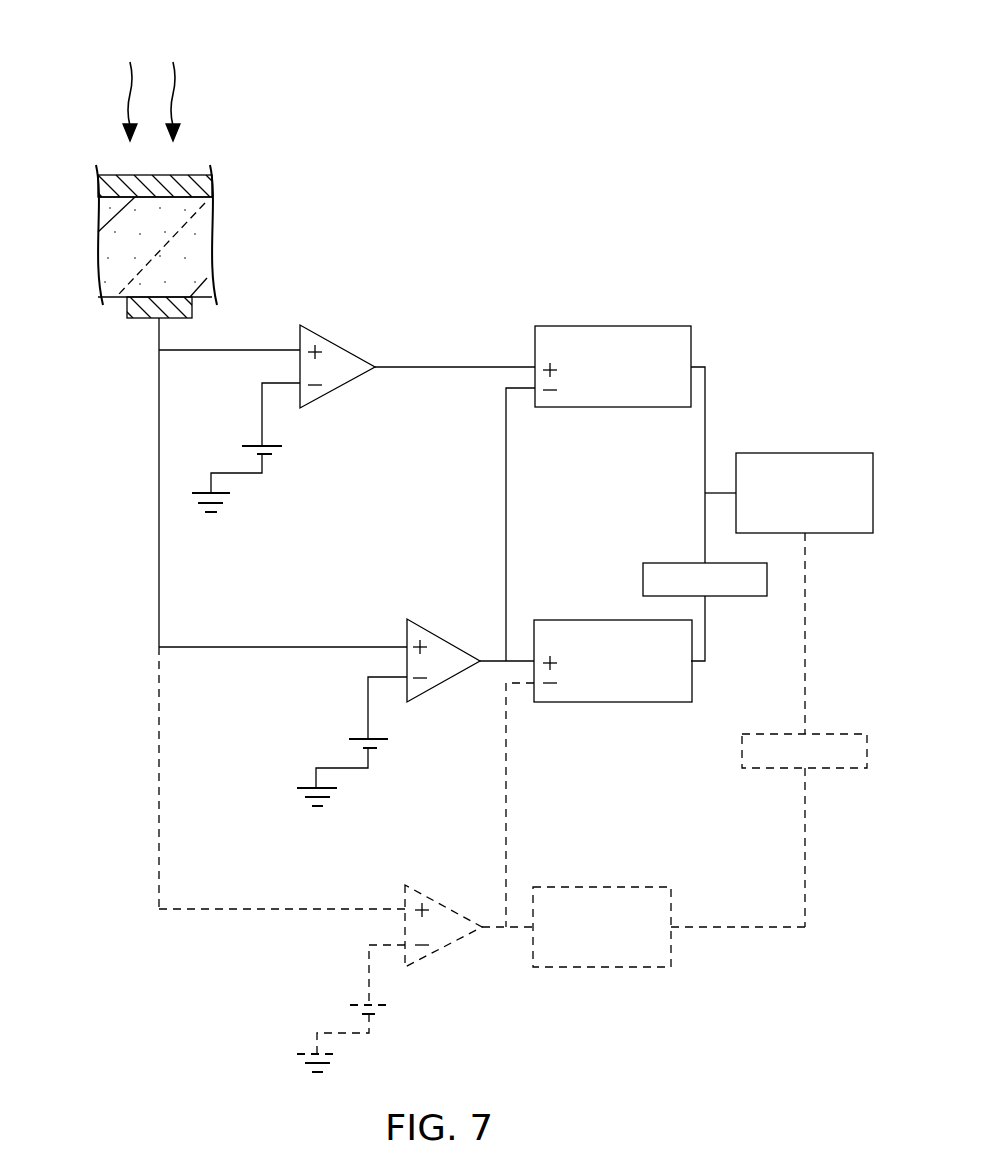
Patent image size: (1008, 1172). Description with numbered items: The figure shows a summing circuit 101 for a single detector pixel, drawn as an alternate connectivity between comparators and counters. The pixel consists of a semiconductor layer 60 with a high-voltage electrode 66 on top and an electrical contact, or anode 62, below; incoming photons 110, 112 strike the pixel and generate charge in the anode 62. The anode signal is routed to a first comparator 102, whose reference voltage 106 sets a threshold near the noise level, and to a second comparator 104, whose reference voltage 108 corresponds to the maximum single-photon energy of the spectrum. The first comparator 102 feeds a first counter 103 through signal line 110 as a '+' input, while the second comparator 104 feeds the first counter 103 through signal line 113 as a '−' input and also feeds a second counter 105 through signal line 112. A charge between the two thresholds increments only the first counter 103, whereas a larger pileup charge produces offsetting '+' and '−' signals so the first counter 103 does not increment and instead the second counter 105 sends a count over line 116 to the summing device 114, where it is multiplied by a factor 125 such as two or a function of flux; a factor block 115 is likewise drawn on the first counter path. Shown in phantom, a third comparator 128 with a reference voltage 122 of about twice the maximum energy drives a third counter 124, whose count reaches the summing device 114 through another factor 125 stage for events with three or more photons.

The summing circuit 101 is at (480, 185).
The semiconductor layer 60 is at (102, 257).
The electrical contact (anode) 62 is at (127, 311).
The high-voltage electrode 66 is at (212, 187).
The signal line / incoming photon 110 is at (130, 77).
The signal line / incoming photon 112 is at (173, 88).
The first comparator 102 is at (340, 340).
The second comparator 104 is at (448, 637).
The reference voltage 106 is at (278, 452).
The reference voltage 108 is at (385, 746).
The first counter 103 is at (692, 342).
The second counter 105 is at (658, 703).
The signal line 113 is at (506, 468).
The summing device 114 is at (822, 453).
The factor block 115 is at (757, 598).
The line 116 is at (708, 648).
The reference voltage 122 is at (385, 1010).
The third counter 124 is at (672, 905).
The factor 125 is at (843, 767).
The third comparator 128 is at (445, 905).